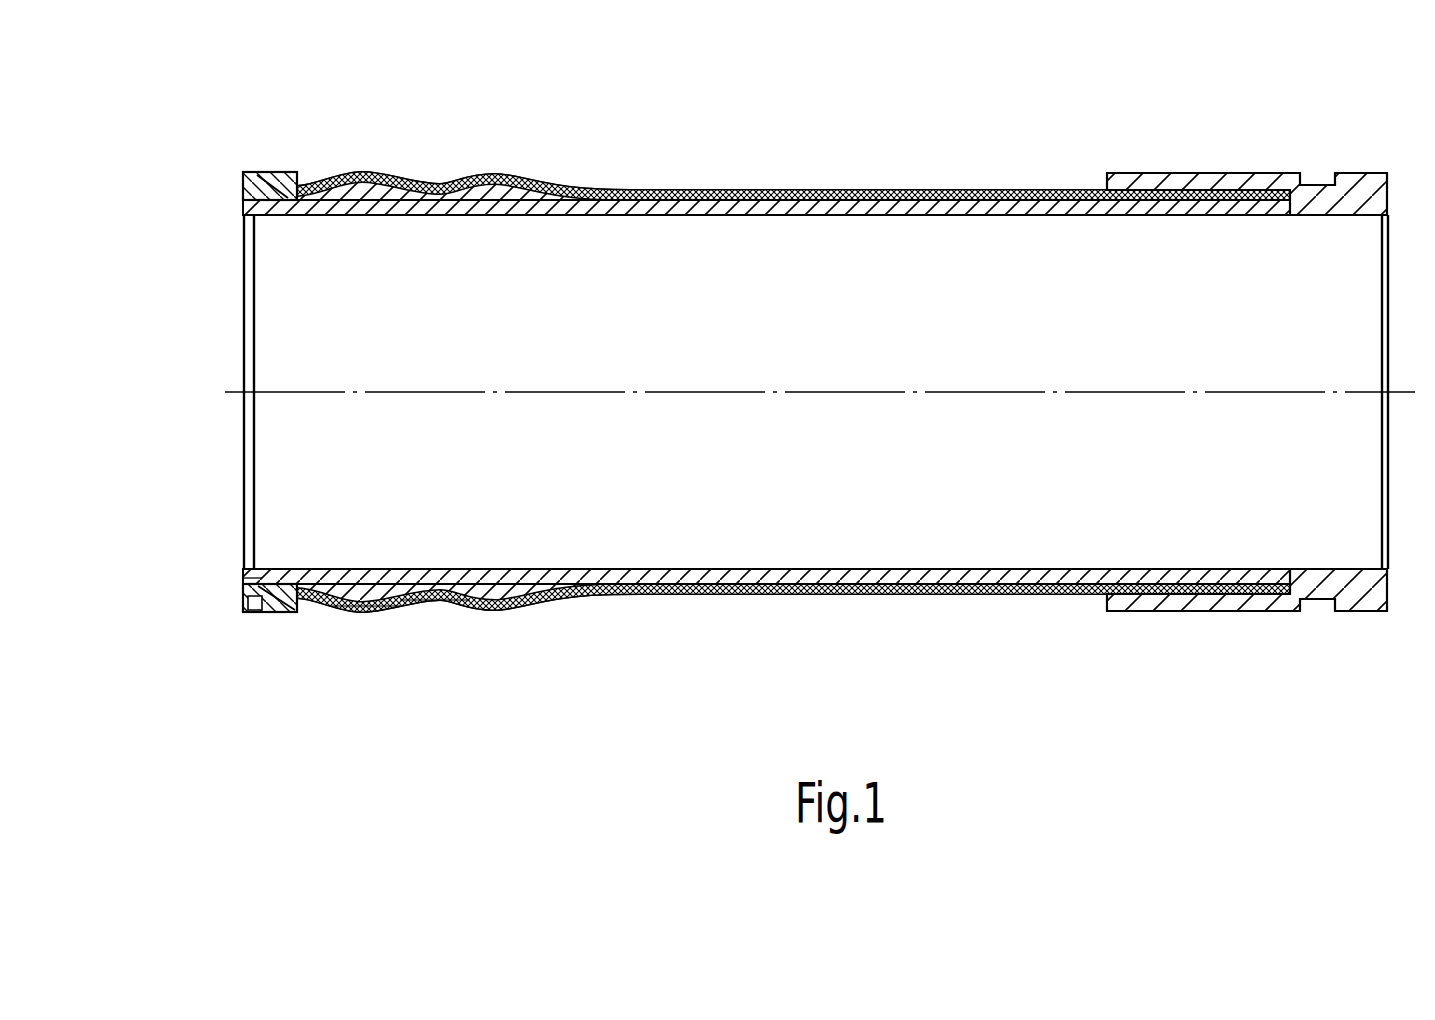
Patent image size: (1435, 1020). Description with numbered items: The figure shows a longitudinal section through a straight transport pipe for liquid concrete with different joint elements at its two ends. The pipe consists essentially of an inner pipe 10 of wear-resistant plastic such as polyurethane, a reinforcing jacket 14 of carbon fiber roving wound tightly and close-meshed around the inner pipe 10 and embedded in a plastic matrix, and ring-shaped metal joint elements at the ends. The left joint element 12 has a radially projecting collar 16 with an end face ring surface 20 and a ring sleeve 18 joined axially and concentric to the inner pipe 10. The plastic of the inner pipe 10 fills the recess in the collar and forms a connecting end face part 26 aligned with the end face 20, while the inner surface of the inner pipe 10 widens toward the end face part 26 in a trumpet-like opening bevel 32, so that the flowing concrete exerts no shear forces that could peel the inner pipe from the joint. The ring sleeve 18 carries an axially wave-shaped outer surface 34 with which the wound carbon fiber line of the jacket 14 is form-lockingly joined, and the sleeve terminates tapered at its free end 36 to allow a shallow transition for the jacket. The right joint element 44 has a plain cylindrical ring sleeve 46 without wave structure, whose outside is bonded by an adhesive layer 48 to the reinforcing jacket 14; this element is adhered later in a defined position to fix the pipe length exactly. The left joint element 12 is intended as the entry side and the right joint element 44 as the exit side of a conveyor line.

The inner pipe 10 is at (673, 190).
The joint element 12 is at (297, 612).
The reinforcing jacket 14 is at (753, 594).
The collar 16 is at (263, 611).
The ring sleeve 18 is at (432, 611).
The end face ring surface 20 is at (245, 606).
The end face part 26 is at (243, 579).
The opening bevel 32 is at (247, 295).
The wave-shaped outer surface 34 is at (388, 613).
The free end 36 is at (565, 594).
The joint element 44 is at (1318, 613).
The ring sleeve 46 is at (1220, 613).
The adhesive layer 48 is at (1130, 613).